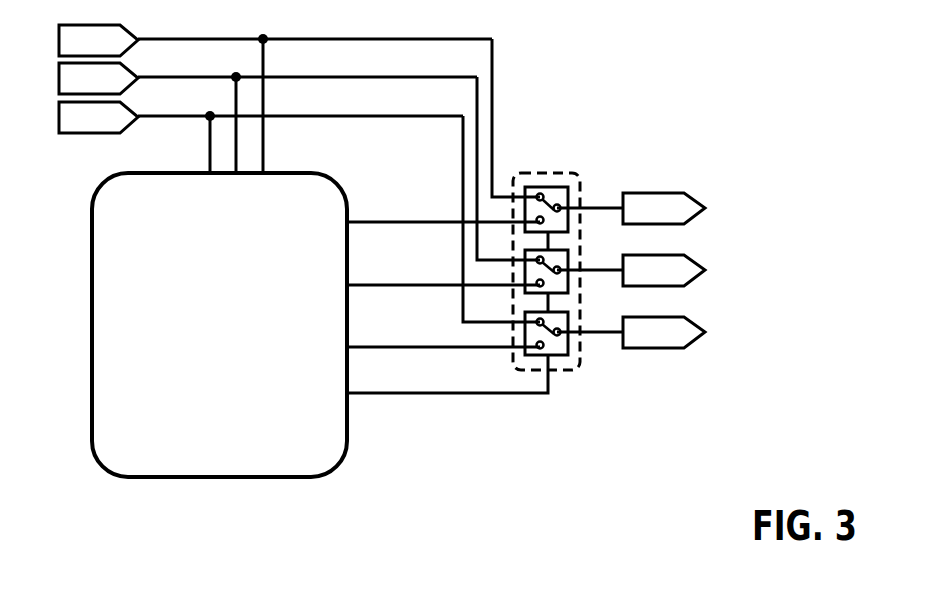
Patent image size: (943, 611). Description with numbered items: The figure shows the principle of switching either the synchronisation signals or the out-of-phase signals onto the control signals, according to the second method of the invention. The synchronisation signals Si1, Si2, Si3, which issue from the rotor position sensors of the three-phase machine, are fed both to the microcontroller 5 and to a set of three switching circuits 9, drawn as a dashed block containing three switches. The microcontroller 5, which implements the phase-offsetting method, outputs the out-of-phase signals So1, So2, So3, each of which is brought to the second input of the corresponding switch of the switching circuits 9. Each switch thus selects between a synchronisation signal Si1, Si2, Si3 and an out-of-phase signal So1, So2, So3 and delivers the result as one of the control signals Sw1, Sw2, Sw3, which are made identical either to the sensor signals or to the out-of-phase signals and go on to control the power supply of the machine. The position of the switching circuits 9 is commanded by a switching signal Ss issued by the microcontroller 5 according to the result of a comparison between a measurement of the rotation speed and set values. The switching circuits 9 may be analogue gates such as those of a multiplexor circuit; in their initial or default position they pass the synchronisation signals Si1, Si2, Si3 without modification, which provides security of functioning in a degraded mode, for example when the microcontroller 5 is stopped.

The microcontroller 5 is at (198, 432).
The switching circuits 9 is at (565, 360).
The synchronisation signal Si1 is at (299, 111).
The synchronisation signal Si2 is at (299, 161).
The synchronisation signal Si3 is at (299, 212).
The out-of-phase signal So1 is at (443, 203).
The out-of-phase signal So2 is at (443, 266).
The out-of-phase signal So3 is at (443, 328).
The switching signal Ss is at (447, 374).
The control signal Sw1 is at (631, 208).
The control signal Sw2 is at (631, 270).
The control signal Sw3 is at (631, 332).